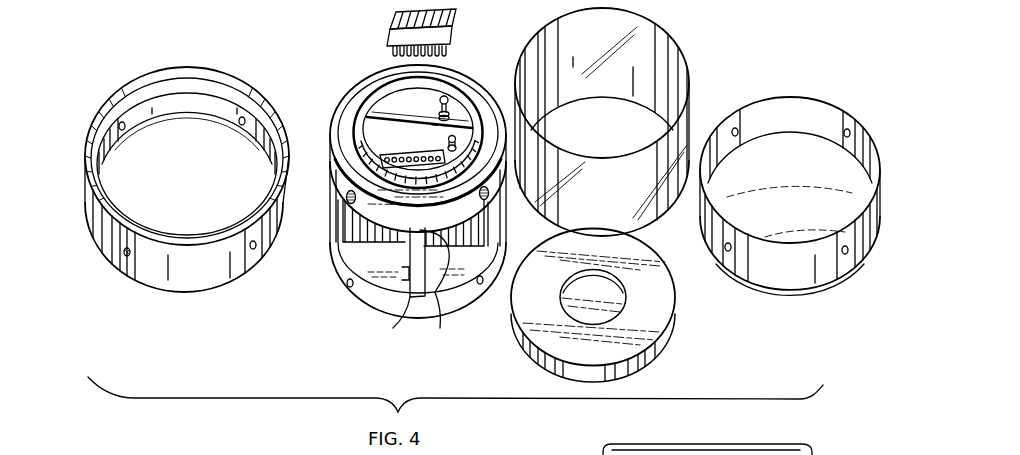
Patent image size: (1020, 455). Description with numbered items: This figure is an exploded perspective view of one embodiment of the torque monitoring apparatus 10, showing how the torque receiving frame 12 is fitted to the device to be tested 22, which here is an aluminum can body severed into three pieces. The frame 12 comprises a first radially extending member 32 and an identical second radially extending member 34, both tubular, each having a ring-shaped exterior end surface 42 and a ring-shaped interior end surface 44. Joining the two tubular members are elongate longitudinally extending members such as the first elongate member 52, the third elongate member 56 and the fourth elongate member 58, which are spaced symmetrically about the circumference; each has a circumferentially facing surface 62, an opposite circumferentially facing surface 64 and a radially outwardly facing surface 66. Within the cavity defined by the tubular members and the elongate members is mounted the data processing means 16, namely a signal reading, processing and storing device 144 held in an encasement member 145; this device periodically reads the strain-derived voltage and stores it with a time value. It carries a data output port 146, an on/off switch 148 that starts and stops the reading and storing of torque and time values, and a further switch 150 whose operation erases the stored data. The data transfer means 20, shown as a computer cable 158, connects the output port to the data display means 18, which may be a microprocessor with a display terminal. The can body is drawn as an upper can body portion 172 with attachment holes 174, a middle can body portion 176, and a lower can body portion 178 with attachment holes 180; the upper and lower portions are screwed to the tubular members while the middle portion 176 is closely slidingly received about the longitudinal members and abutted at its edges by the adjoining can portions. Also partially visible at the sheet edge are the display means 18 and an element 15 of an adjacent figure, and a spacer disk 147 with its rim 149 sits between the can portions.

The torque monitoring apparatus 10 is at (68, 454).
The torque receiving frame 12 is at (347, 95).
The band 15 is at (839, 448).
The data processing means 16 is at (397, 102).
The data display means 18 is at (504, 448).
The data transfer means 20 is at (390, 22).
The device to be tested 22 is at (138, 65).
The first radially extending member 32 is at (371, 299).
The second radially extending member 34 is at (343, 169).
The exterior end surface 42 is at (482, 94).
The interior end surface 44 is at (440, 328).
The first elongate longitudinally extending member 52 is at (404, 249).
The third elongate longitudinally extending member 56 is at (332, 219).
The fourth elongate longitudinally extending member 58 is at (496, 200).
The axially and radially extending surface 62 is at (497, 233).
The axially and radially extending surface 64 is at (333, 223).
The axially and circumferentially extending surface 66 is at (393, 328).
The signal reading, processing and storing device 144 is at (388, 108).
The encasement member 145 is at (358, 132).
The data output port 146 is at (397, 152).
The spacer disk 147 is at (670, 327).
The on/off switch 148 is at (446, 96).
The disk rim 149 is at (606, 372).
The switch 150 is at (447, 139).
The computer cable 158 is at (452, 24).
The upper can body portion 172 is at (90, 140).
The attachment holes 174 is at (123, 254).
The middle can body portion 176 is at (690, 85).
The lower can body portion 178 is at (837, 106).
The attachment holes 180 is at (845, 256).